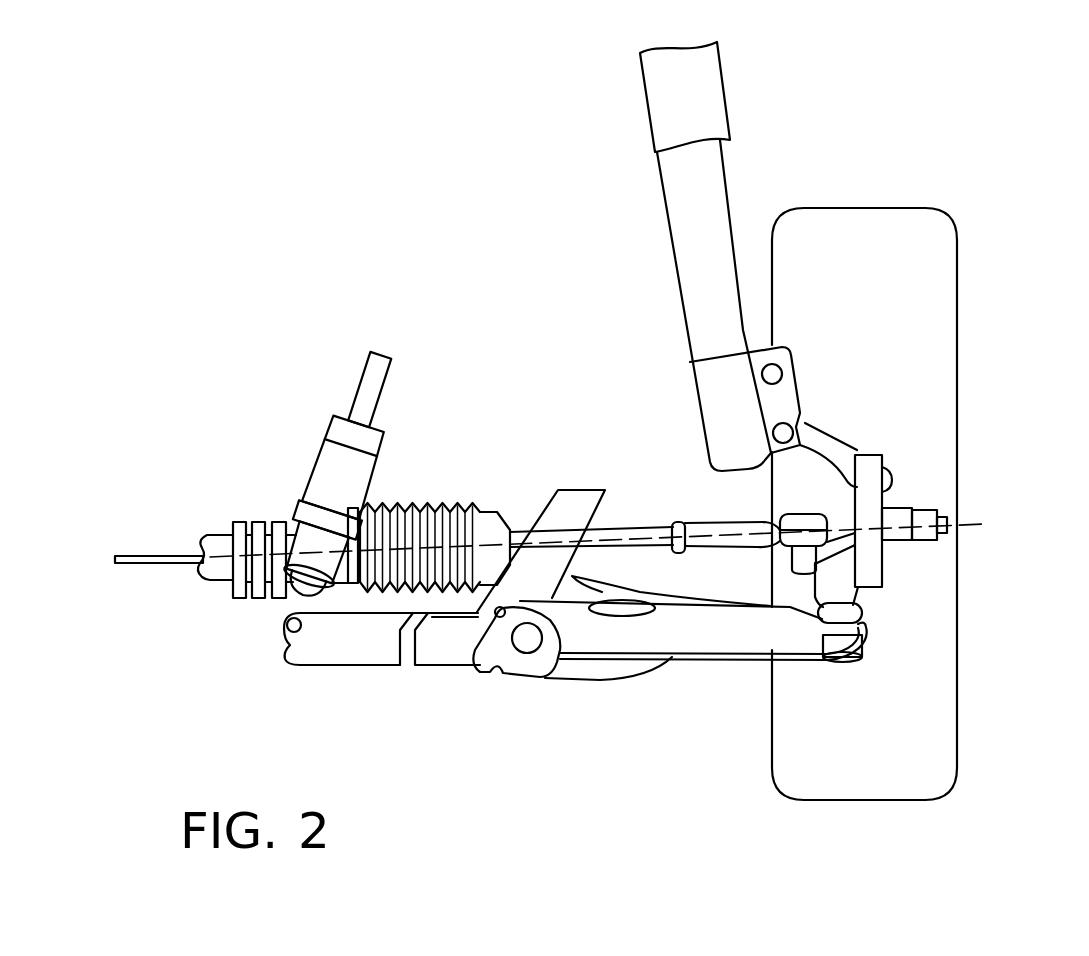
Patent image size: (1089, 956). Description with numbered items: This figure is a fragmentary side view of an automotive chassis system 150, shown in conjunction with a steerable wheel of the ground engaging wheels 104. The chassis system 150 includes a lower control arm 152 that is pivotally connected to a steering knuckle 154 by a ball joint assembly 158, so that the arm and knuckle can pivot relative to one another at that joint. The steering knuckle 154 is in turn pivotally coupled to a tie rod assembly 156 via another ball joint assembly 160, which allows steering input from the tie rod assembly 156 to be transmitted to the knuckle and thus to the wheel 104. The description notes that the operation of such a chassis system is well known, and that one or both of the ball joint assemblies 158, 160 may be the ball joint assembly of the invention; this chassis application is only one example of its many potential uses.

The ground engaging wheels 104 is at (903, 225).
The chassis system 150 is at (402, 280).
The lower control arm 152 is at (570, 635).
The steering knuckle 154 is at (842, 447).
The tie rod assembly 156 is at (653, 455).
The ball joint assembly 158 is at (820, 660).
The ball joint assembly 160 is at (786, 514).